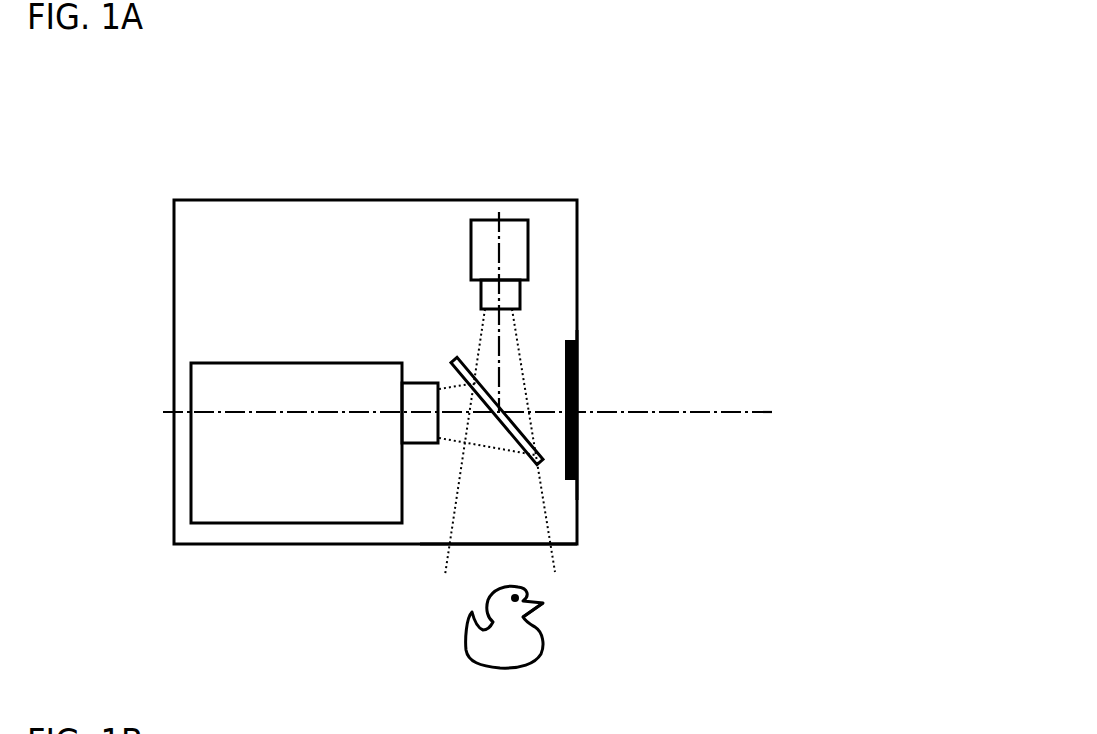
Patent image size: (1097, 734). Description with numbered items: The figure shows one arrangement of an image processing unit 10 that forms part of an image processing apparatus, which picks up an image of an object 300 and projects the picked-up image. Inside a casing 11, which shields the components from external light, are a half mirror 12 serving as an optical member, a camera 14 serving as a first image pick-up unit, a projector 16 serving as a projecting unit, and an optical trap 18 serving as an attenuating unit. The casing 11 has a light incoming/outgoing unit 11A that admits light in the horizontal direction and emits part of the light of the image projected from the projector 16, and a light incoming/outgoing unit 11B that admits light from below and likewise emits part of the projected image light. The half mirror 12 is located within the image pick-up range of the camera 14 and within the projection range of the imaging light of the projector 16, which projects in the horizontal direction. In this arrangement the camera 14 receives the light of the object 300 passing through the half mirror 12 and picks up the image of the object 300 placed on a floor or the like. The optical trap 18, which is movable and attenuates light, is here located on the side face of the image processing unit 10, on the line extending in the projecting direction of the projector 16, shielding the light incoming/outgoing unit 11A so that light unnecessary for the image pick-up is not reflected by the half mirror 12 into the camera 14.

The image processing unit 10 is at (514, 412).
The casing 11 is at (577, 243).
The light incoming/outgoing unit 11A is at (578, 440).
The light incoming/outgoing unit 11B is at (500, 544).
The half mirror 12 is at (451, 357).
The camera 14 is at (525, 220).
The projector 16 is at (327, 573).
The optical trap 18 is at (577, 340).
The object 300 is at (533, 628).